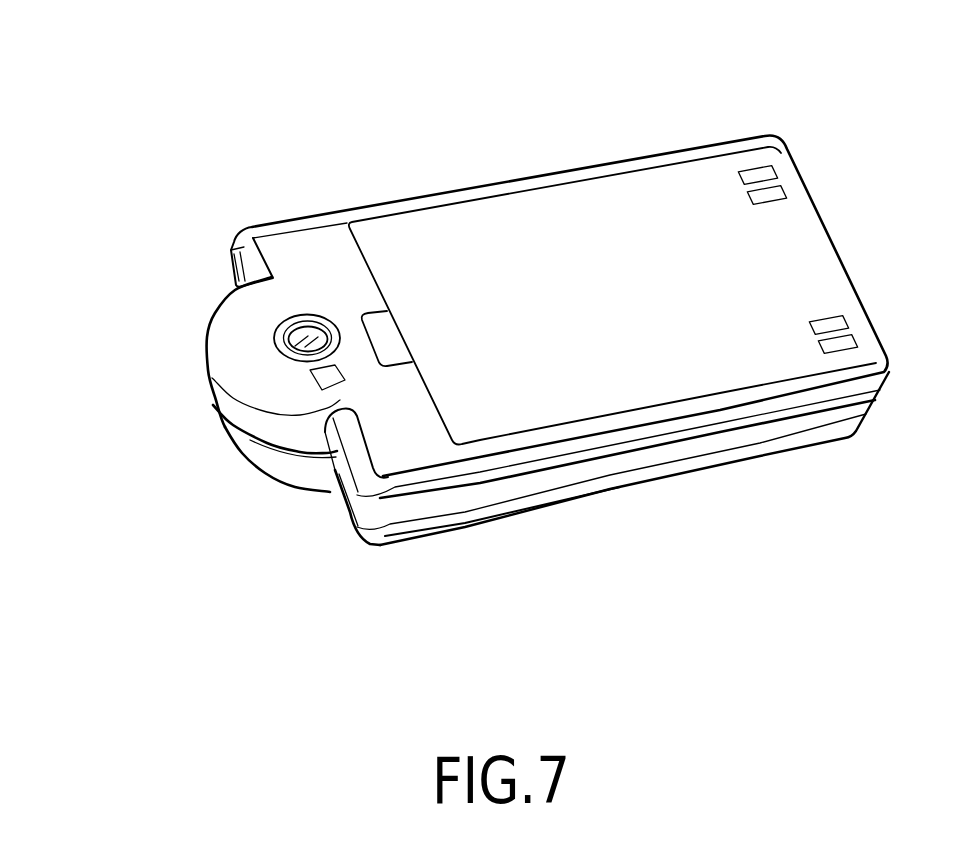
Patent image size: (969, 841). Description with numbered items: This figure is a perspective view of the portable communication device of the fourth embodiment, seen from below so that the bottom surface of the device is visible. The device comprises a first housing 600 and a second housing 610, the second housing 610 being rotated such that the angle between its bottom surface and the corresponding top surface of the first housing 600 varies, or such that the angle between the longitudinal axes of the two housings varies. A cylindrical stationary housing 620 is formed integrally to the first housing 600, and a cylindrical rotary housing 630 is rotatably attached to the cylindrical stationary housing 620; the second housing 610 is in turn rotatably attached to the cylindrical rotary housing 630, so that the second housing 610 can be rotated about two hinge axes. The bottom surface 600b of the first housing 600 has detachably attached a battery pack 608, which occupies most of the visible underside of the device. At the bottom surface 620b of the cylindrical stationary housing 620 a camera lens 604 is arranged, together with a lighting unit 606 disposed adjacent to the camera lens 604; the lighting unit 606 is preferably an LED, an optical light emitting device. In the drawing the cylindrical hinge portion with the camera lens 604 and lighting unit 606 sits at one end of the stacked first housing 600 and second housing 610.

The first housing 600 is at (588, 456).
The bottom surface of the first housing 600b is at (400, 465).
The camera lens 604 is at (307, 336).
The lighting unit 606 is at (322, 378).
The battery pack 608 is at (575, 206).
The second housing 610 is at (508, 502).
The cylindrical stationary housing 620 is at (277, 430).
The bottom surface of the cylindrical stationary housing 620b is at (224, 331).
The cylindrical rotary housing 630 is at (296, 472).